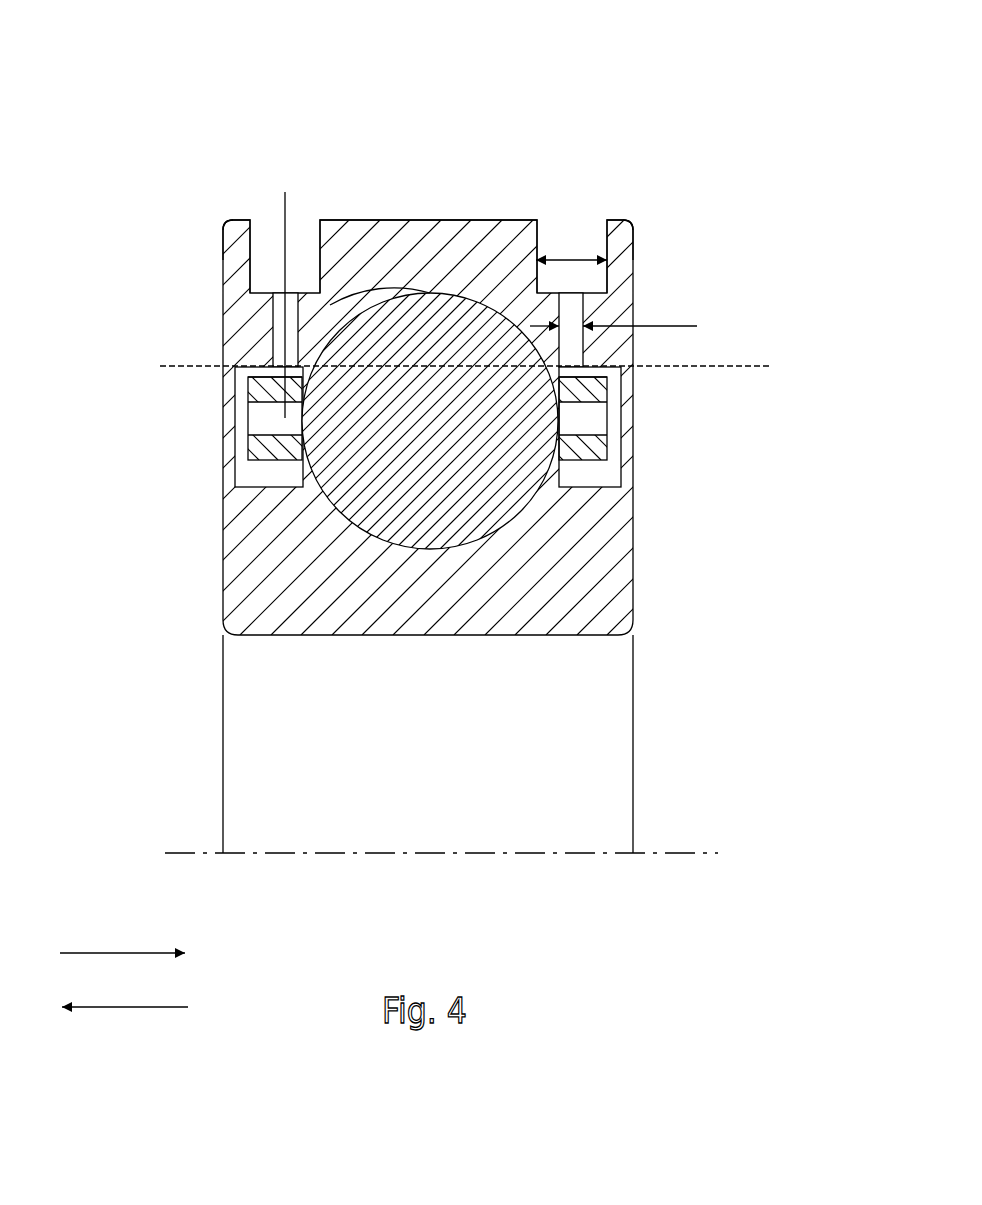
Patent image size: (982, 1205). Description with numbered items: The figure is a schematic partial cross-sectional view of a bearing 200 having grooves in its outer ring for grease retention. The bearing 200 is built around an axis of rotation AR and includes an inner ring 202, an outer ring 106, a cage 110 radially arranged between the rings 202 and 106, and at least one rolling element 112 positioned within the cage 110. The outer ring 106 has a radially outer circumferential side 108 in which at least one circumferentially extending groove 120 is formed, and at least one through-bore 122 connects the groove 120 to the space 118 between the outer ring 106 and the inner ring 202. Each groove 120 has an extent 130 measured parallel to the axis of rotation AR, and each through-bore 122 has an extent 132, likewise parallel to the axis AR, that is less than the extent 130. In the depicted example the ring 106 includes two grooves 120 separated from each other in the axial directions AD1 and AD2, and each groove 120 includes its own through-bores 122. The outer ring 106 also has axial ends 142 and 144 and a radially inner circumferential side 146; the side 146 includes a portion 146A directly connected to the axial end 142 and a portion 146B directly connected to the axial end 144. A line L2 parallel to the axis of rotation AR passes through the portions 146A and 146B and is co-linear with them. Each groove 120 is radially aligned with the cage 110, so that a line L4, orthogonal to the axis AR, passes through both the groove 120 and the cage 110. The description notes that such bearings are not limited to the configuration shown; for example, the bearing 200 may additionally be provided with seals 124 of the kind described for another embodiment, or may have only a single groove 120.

The bearing 200 is at (740, 54).
The outer ring 106 is at (378, 214).
The radially outer circumferential side 108 is at (465, 218).
The cage 110 is at (223, 318).
The rolling element 112 is at (497, 330).
The space 118 is at (265, 474).
The circumferentially extending groove 120 is at (263, 242).
The through-bore 122 is at (223, 300).
The seal 124 is at (223, 427).
The extent 130 is at (567, 259).
The extent 132 is at (678, 326).
The axial end 142 is at (275, 296).
The axial end 144 is at (575, 298).
The radially inner circumferential side 146 is at (370, 295).
The portion 146A is at (261, 364).
The portion 146B is at (612, 362).
The inner ring 202 is at (468, 636).
The line L2 is at (750, 365).
The line L4 is at (284, 205).
The axis of rotation AR is at (682, 853).
The axial direction AD1 is at (100, 952).
The axial direction AD2 is at (122, 1008).